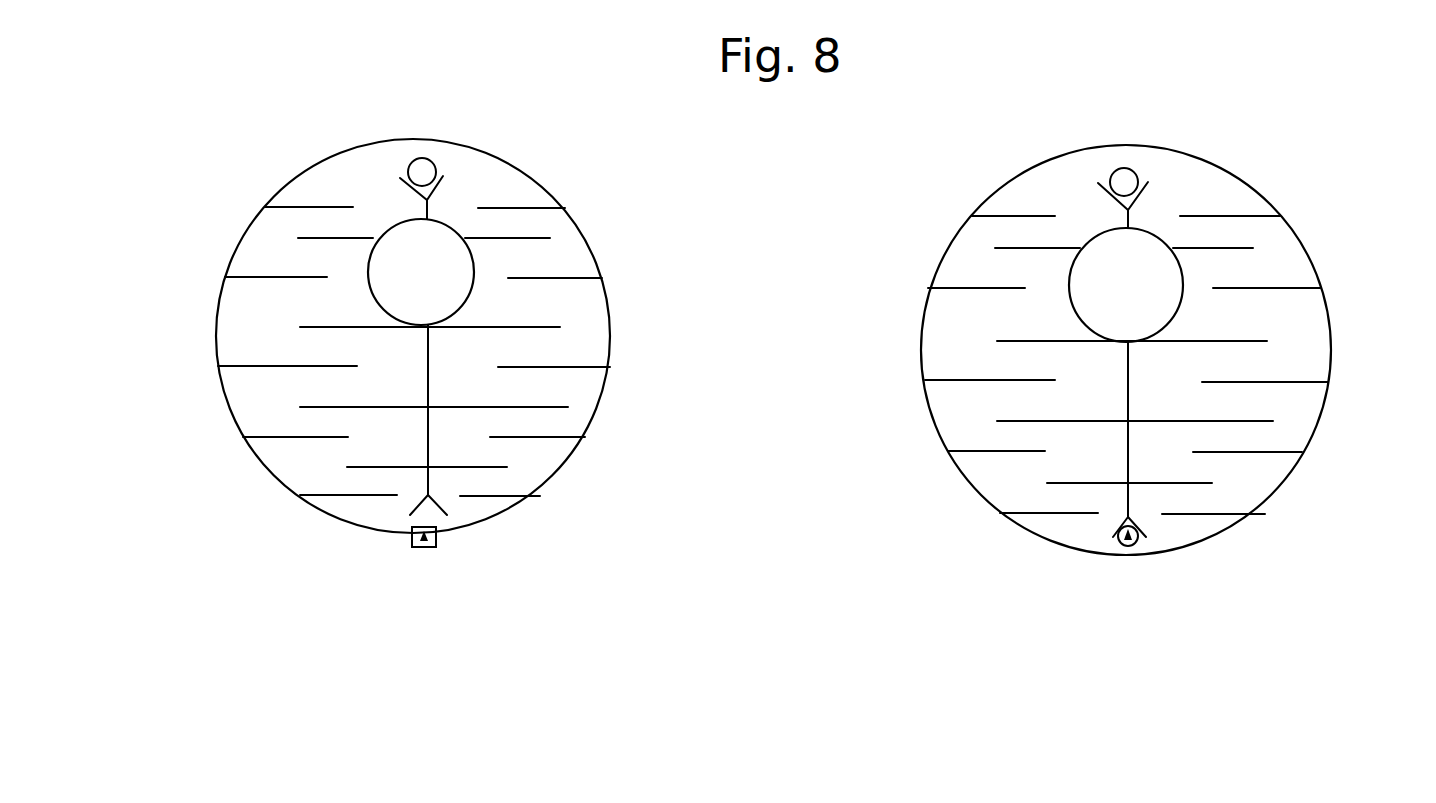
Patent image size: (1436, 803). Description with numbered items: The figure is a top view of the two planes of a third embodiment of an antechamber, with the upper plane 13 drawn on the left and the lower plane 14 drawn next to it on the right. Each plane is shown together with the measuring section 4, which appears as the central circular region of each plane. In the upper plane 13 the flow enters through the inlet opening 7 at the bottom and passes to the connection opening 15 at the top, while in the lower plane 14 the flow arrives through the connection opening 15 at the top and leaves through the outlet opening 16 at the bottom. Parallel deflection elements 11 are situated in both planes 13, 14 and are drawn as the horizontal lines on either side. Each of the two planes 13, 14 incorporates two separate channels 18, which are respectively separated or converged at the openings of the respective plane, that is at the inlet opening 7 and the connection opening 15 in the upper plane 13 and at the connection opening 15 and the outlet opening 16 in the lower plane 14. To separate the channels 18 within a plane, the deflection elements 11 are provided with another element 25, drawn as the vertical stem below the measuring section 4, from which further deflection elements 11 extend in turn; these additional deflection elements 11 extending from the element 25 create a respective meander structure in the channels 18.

The measuring section 4 is at (396, 268).
The inlet opening 7 is at (420, 560).
The deflection elements 11 is at (287, 368).
The upper plane 13 is at (521, 530).
The lower plane 14 is at (968, 512).
The connection opening 15 is at (417, 172).
The outlet opening 16 is at (1128, 560).
The channels 18 is at (233, 316).
The element 25 is at (428, 428).